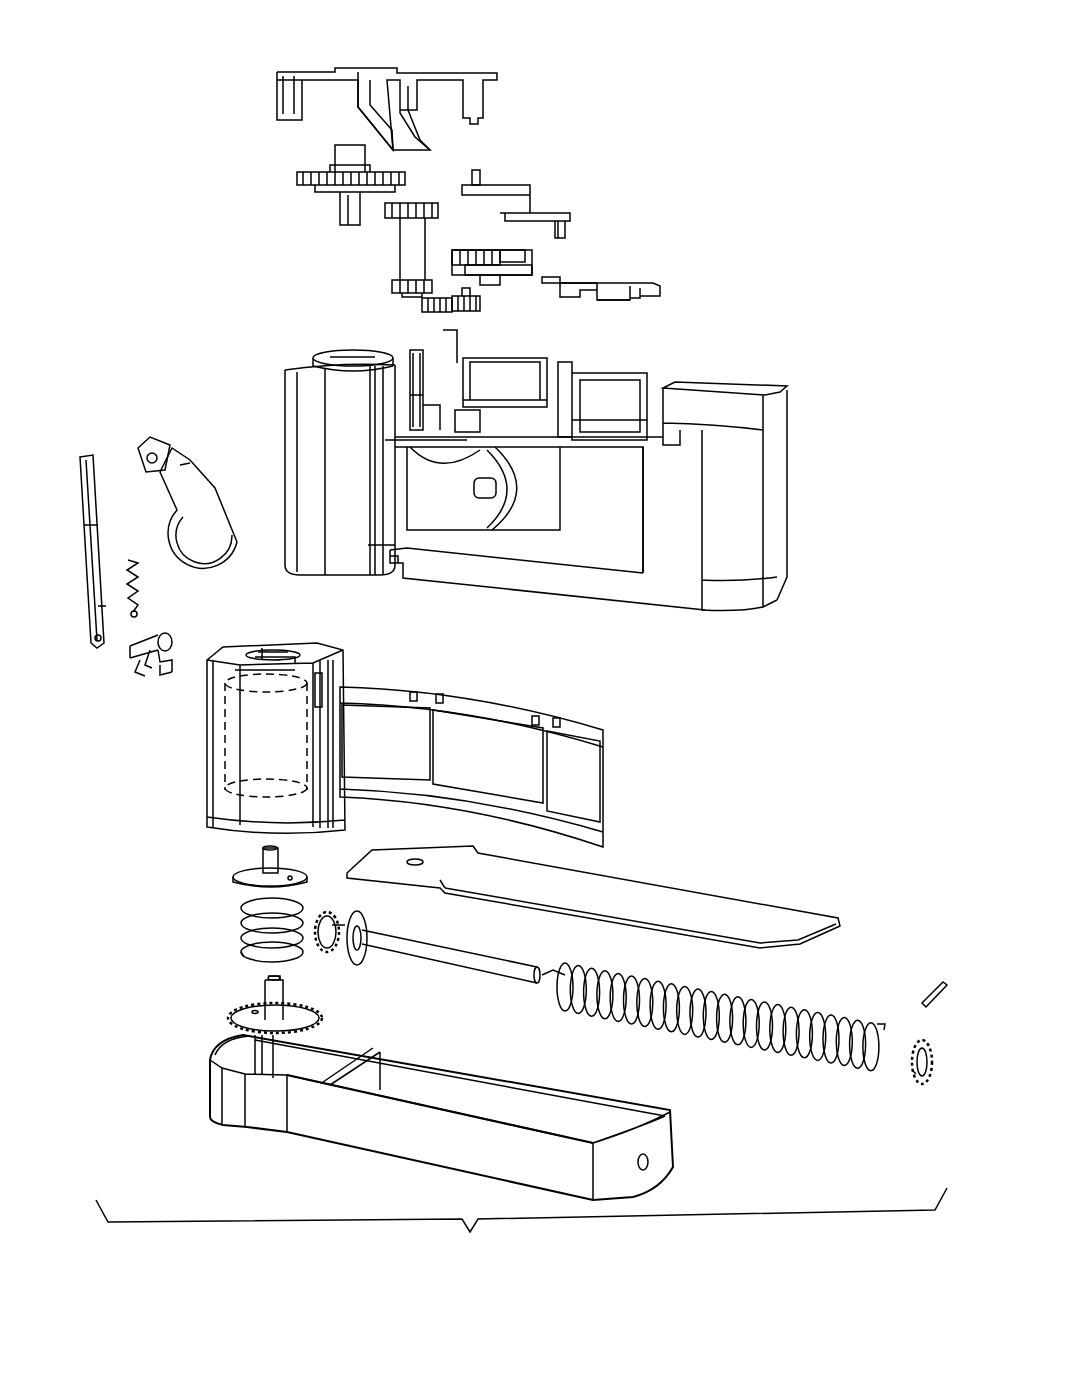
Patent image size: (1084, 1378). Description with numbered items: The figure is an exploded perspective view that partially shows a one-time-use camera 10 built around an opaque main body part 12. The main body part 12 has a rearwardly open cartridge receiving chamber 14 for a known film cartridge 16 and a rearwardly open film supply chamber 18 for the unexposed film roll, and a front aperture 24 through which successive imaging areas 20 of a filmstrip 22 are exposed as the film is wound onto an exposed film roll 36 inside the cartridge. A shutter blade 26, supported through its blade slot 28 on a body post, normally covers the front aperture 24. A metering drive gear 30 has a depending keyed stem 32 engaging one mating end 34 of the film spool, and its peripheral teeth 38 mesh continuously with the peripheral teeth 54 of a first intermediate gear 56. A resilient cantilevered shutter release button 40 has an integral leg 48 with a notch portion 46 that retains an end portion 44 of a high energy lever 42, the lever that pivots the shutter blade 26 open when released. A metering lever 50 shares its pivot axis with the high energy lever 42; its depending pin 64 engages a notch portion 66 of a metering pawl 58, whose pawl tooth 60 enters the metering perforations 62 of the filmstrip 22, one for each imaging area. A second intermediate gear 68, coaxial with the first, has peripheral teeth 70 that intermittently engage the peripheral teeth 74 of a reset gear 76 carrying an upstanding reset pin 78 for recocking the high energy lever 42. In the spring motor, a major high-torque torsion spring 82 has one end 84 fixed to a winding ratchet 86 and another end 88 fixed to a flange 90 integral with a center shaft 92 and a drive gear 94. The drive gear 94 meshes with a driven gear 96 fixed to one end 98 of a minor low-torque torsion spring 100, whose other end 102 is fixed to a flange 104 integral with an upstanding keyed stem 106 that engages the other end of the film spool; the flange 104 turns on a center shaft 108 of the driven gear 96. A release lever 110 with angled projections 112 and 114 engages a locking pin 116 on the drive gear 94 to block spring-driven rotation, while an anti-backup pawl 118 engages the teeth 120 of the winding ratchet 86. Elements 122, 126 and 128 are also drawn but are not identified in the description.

The one-time-use camera 10 is at (752, 142).
The main body part 12 is at (800, 526).
The cartridge receiving chamber 14 is at (290, 397).
The film cartridge 16 is at (195, 798).
The film supply chamber 18 is at (750, 562).
The imaging areas 20 is at (589, 784).
The filmstrip 22 is at (605, 795).
The front aperture 24 is at (475, 490).
The shutter blade 26 is at (215, 505).
The blade slot 28 is at (155, 438).
The metering drive gear 30 is at (310, 172).
The keyed stem 32 is at (340, 215).
The mating end 34 is at (265, 650).
The exposed film roll 36 is at (225, 718).
The peripheral teeth 38 is at (297, 178).
The shutter release button 40 is at (370, 68).
The high energy lever 42 is at (553, 254).
The end portion 44 is at (452, 255).
The notch portion 46 is at (420, 135).
The integral leg 48 is at (365, 98).
The metering lever 50 is at (545, 180).
The peripheral teeth 54 is at (385, 213).
The first intermediate gear 56 is at (420, 205).
The metering pawl 58 is at (630, 306).
The pawl tooth 60 is at (655, 290).
The metering perforations 62 is at (480, 175).
The depending pin 64 is at (570, 225).
The notch portion 66 is at (585, 277).
The second intermediate gear 68 is at (412, 292).
The peripheral teeth 70 is at (390, 283).
The peripheral teeth 74 is at (490, 303).
The reset gear 76 is at (433, 312).
The reset pin 78 is at (472, 290).
The major high-torque torsion spring 82 is at (755, 1052).
The one end 84 is at (880, 1025).
The winding ratchet 86 is at (918, 1078).
The another end 88 is at (553, 968).
The flange 90 is at (362, 955).
The center shaft 92 is at (490, 975).
The drive gear 94 is at (330, 955).
The driven gear 96 is at (240, 1016).
The one end 98 is at (242, 950).
The minor low-torque torsion spring 100 is at (228, 921).
The another end 102 is at (323, 895).
The flange 104 is at (250, 873).
The upstanding keyed stem 106 is at (265, 848).
The center shaft 108 is at (285, 982).
The release lever 110 is at (182, 628).
The angled projection 112 is at (165, 680).
The angled projection 114 is at (140, 665).
The locking pin 116 is at (345, 912).
The anti-backup pawl 118 is at (927, 980).
The teeth 120 is at (910, 1068).
The pinion 122 is at (516, 250).
The slide lever 126 is at (100, 530).
The return spring 128 is at (140, 575).